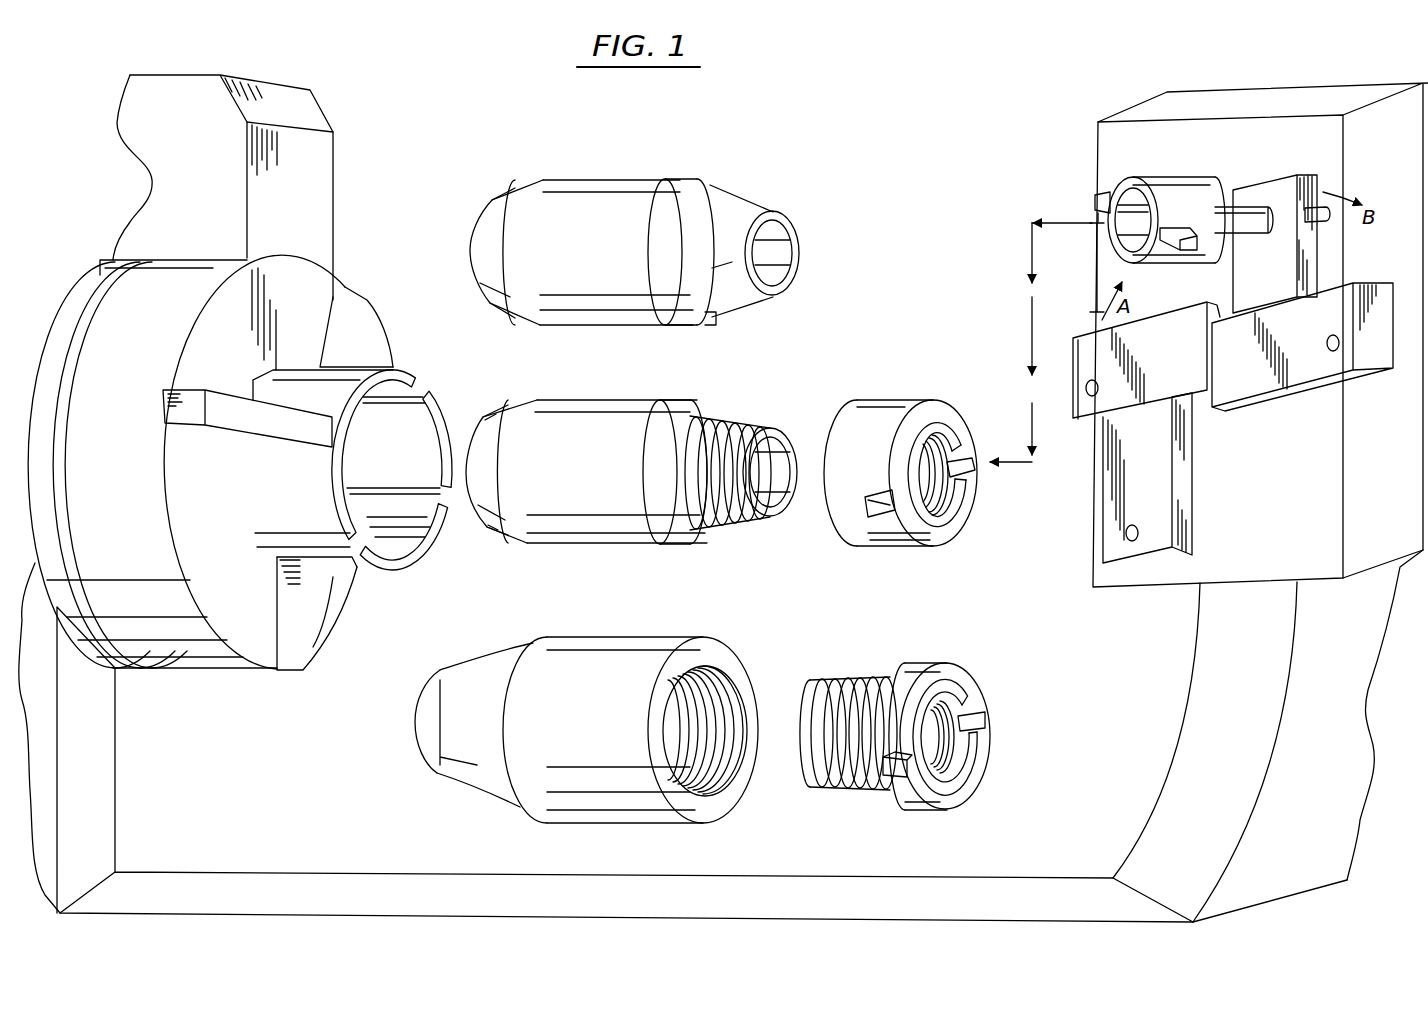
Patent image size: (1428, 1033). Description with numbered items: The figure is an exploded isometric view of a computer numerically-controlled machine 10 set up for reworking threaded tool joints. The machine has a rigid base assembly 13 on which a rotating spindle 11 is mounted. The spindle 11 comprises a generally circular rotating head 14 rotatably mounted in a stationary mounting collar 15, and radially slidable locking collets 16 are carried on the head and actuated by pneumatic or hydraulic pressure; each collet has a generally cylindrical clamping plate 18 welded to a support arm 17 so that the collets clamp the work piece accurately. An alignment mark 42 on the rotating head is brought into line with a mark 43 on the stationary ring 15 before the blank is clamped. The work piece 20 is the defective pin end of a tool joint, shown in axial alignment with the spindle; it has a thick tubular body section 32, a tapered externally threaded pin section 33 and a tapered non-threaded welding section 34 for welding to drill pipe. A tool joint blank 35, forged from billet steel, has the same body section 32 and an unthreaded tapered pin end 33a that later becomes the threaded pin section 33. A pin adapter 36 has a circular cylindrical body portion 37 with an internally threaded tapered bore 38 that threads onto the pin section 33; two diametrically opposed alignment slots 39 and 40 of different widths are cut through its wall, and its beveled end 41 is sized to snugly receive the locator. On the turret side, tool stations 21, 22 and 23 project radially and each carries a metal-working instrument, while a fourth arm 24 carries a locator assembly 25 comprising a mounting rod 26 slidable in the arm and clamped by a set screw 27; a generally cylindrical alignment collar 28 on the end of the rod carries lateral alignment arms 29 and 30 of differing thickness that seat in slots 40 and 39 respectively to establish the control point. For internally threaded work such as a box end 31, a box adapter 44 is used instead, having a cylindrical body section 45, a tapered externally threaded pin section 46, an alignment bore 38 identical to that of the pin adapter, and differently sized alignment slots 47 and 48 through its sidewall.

The computer numerically-controlled (CNC) machine 10 is at (892, 152).
The rotating spindle 11 is at (305, 307).
The rigid base assembly 13 is at (568, 910).
The rotating head 14 is at (168, 258).
The stationary mounting collar 15 is at (97, 283).
The locking collets 16 is at (290, 367).
The support arms 17 is at (210, 412).
The clamping plates 18 is at (335, 460).
The work piece 20 is at (657, 400).
The tool station 21 is at (1138, 580).
The tool station 22 is at (1073, 410).
The tool station 23 is at (1378, 283).
The fourth arm 24 is at (1270, 180).
The locator assembly 25 is at (1120, 248).
The mounting rod 26 is at (1257, 205).
The set screw 27 is at (1320, 221).
The alignment collar 28 is at (1112, 232).
The lateral alignment arm 29 is at (1107, 197).
The lateral alignment arm 30 is at (1190, 240).
The box end 31 is at (647, 637).
The thick tubular body section 32 is at (610, 177).
The tapered externally threaded pin section 33 is at (725, 412).
The tapered pin end 33a is at (743, 203).
The tapered non-threaded welding section 34 is at (497, 412).
The tool joint blank 35 is at (642, 180).
The pin adapter 36 is at (868, 402).
The circular cylindrical body portion 37 is at (895, 551).
The internally threaded tapered bore 38 is at (963, 515).
The alignment slot 39 is at (880, 522).
The alignment slot 40 is at (980, 458).
The beveled end 41 is at (955, 408).
The alignment mark 42 is at (66, 465).
The alignment mark 43 is at (35, 465).
The box adapter 44 is at (923, 663).
The cylindrical body section 45 is at (945, 670).
The tapered externally threaded pin section 46 is at (868, 678).
The alignment slot 47 is at (980, 718).
The alignment slot 48 is at (868, 793).